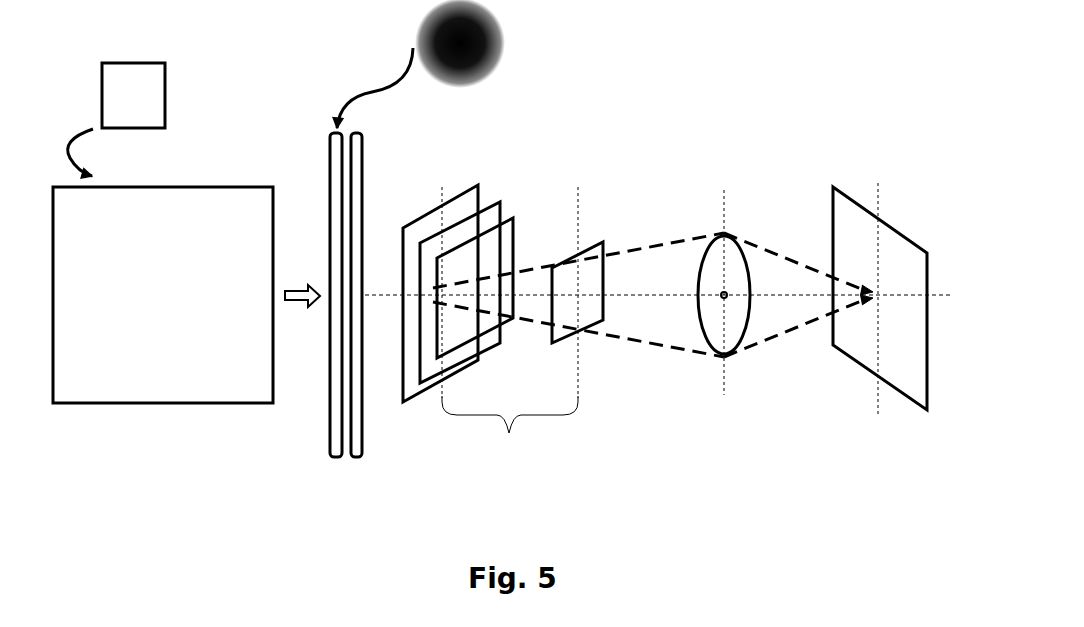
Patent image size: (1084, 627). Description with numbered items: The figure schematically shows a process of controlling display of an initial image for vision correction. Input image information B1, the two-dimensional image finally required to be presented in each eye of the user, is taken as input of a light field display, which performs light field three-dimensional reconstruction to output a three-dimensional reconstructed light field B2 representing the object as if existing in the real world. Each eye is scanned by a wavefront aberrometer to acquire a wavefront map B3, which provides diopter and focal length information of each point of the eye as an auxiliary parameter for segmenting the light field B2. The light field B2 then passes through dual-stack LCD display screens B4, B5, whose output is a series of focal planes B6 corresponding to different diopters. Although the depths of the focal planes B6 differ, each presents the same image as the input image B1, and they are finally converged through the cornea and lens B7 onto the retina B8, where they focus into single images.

The input image information B1 is at (167, 90).
The three-dimensional reconstructed light field B2 is at (138, 408).
The wavefront map B3 is at (507, 58).
The dual-stack LCD display screen B4 is at (330, 403).
The dual-stack LCD display screen B5 is at (362, 430).
The series of focal planes B6 is at (523, 437).
The cornea and lens B7 is at (725, 230).
The retina B8 is at (853, 225).